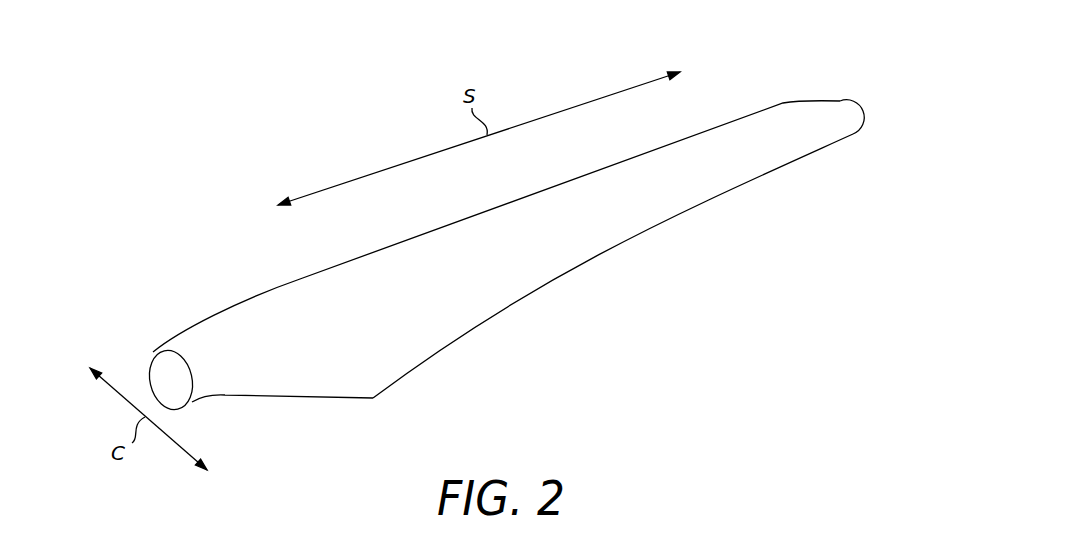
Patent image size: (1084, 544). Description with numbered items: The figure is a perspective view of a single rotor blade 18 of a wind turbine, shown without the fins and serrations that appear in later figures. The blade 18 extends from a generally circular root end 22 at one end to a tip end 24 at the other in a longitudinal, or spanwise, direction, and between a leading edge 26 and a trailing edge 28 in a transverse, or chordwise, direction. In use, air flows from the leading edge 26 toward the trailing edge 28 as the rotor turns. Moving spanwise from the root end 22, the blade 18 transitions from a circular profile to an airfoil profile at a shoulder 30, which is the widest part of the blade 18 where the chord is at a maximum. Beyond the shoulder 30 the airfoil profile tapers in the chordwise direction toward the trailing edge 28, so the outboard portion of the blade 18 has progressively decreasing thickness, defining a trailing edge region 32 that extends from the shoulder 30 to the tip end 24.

The blade 18 is at (501, 262).
The root end 22 is at (155, 362).
The tip end 24 is at (852, 103).
The leading edge 26 is at (483, 210).
The trailing edge 28 is at (517, 305).
The shoulder 30 is at (373, 398).
The trailing edge region 32 is at (643, 224).